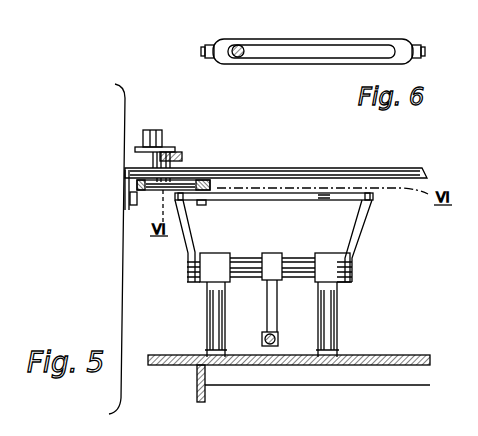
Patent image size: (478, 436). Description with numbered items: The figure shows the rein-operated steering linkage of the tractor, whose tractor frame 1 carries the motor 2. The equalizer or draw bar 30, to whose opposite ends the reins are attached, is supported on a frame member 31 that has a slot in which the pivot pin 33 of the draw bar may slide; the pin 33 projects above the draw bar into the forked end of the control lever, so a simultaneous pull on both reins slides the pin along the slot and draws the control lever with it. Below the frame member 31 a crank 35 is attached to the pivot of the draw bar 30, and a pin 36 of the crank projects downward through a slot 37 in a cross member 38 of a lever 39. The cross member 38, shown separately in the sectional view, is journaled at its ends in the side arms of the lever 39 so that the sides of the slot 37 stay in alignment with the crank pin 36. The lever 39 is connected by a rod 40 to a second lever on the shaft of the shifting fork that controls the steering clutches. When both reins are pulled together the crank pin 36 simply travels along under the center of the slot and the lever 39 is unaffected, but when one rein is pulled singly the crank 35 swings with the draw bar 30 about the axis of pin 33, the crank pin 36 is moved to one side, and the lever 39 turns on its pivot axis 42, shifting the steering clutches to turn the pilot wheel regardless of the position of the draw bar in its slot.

In FIG. 5, the tractor frame 1 is at (196, 378).
In FIG. 5, the motor 2 is at (122, 316).
In FIG. 5, the equalizer or draw bar 30 is at (180, 151).
In FIG. 5, the frame member 31 is at (305, 168).
In FIG. 5, the pivot pin 33 is at (152, 130).
In FIG. 5, the crank 35 is at (195, 183).
In FIG. 6, the crank pin 36 is at (250, 46).
In FIG. 5, the crank pin 36 is at (206, 204).
In FIG. 6, the slot 37 is at (306, 58).
In FIG. 6, the cross member 38 is at (345, 40).
In FIG. 5, the cross member 38 is at (322, 201).
In FIG. 6, the lever 39 is at (206, 56).
In FIG. 5, the lever 39 is at (184, 243).
In FIG. 5, the rod 40 is at (280, 343).
In FIG. 5, the pivot axis 42 is at (298, 264).